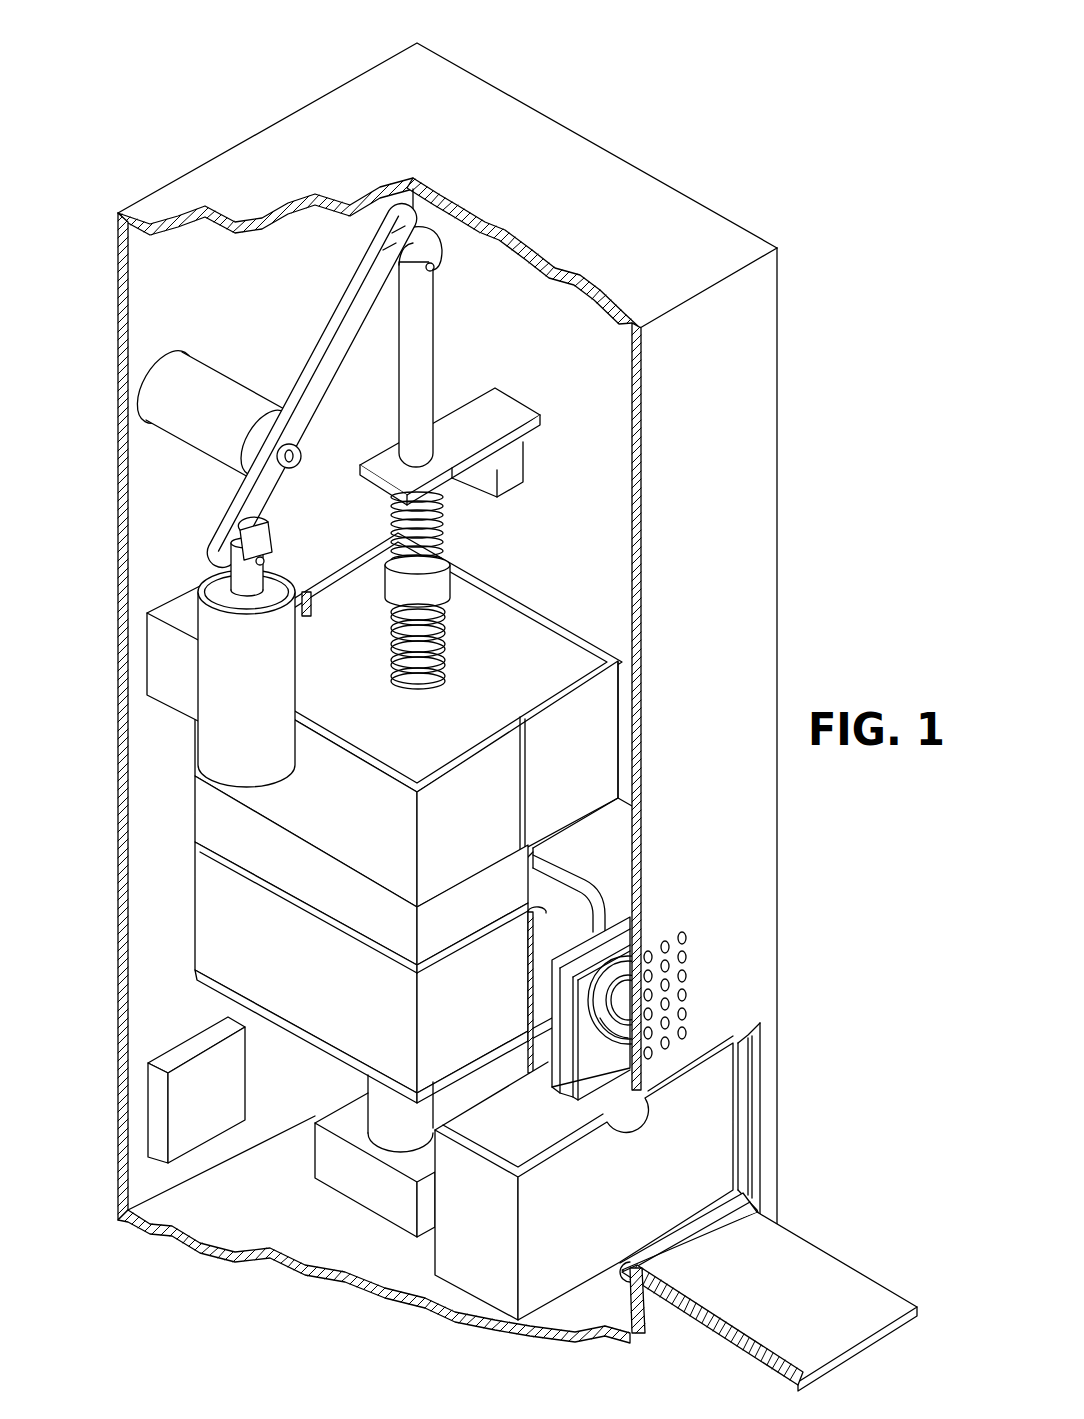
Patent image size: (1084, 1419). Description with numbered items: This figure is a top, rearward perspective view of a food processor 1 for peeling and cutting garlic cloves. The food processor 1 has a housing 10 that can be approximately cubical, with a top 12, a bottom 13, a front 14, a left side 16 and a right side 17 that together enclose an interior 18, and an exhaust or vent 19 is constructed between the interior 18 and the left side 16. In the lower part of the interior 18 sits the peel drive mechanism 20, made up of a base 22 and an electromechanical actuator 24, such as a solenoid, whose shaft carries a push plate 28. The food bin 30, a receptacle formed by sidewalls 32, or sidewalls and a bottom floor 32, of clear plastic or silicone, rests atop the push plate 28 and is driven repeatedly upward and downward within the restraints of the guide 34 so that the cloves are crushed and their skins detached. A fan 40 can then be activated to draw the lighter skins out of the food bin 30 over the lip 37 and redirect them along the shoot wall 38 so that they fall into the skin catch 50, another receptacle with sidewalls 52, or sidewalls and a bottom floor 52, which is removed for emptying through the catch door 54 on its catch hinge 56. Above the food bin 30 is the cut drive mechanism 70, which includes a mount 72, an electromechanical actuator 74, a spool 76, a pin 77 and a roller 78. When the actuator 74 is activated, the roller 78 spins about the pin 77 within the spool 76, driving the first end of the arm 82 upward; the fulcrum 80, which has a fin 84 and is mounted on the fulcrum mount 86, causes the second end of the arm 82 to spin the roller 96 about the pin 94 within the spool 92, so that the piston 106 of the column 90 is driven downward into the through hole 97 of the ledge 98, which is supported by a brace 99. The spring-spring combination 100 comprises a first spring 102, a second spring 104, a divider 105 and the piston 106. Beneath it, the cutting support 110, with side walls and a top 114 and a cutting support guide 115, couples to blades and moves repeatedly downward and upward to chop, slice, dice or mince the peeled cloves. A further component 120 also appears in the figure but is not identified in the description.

The food processor 1 is at (258, 90).
The housing 10 is at (600, 148).
The top 12 is at (428, 125).
The bottom 13 is at (237, 1217).
The front 14 is at (587, 522).
The left side 16 is at (720, 635).
The right side 17 is at (170, 829).
The interior 18 is at (318, 1243).
The exhaust/vent 19 is at (680, 940).
The peel drive mechanism 20 is at (385, 1185).
The base 22 is at (345, 1197).
The electromechanical actuator 24 is at (368, 1095).
The push plate 28 is at (215, 1008).
The food bin 30 is at (298, 1040).
The sidewalls 32 is at (317, 992).
The guide 34 is at (528, 975).
The lip 37 is at (527, 930).
The shoot wall 38 is at (590, 840).
The fan 40 is at (565, 1090).
The skin catch 50 is at (452, 1298).
The sidewalls 52 is at (487, 1235).
The catch door 54 is at (855, 1265).
The catch hinge 56 is at (612, 1262).
The cut drive mechanism 70 is at (270, 362).
The mount 72 is at (178, 600).
The electromechanical actuator 74 is at (297, 686).
The spool 76 is at (262, 597).
The pin 77 is at (266, 562).
The roller 78 is at (274, 532).
The fulcrum 80 is at (302, 452).
The arm 82 is at (342, 368).
The fin 84 is at (372, 262).
The fulcrum mount 86 is at (205, 352).
The column 90 is at (438, 355).
The spool 92 is at (424, 292).
The pin 94 is at (435, 267).
The roller 96 is at (448, 226).
The through hole 97 is at (425, 455).
The ledge 98 is at (530, 400).
The brace 99 is at (525, 470).
The spring-spring combination 100 is at (455, 508).
The first spring 102 is at (388, 518).
The second spring 104 is at (446, 650).
The divider 105 is at (383, 595).
The piston 106 is at (422, 660).
The cutting support 110 is at (318, 858).
The side walls and top 114 is at (433, 744).
The cutting support guide 115 is at (553, 620).
The controller 120 is at (147, 1112).